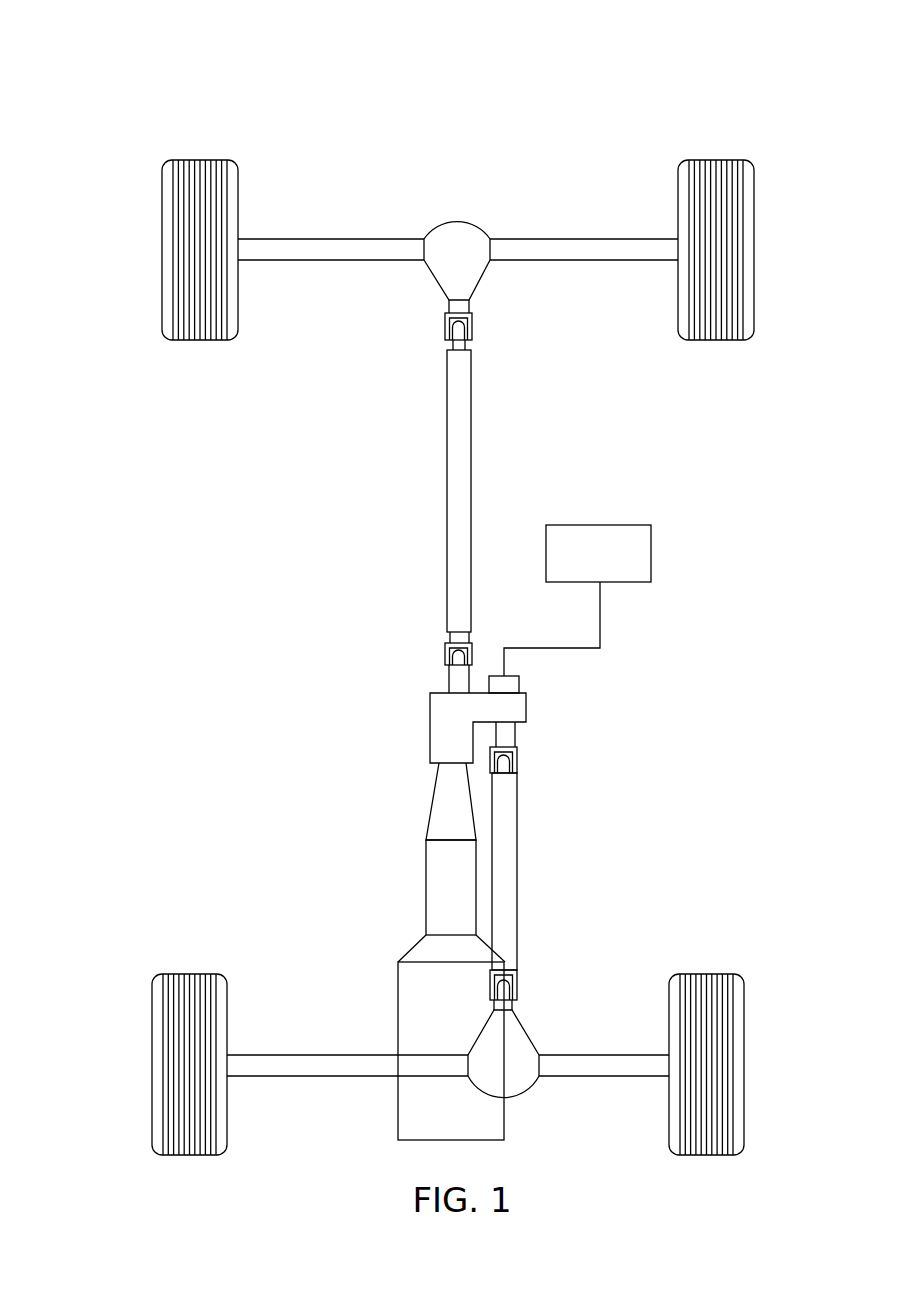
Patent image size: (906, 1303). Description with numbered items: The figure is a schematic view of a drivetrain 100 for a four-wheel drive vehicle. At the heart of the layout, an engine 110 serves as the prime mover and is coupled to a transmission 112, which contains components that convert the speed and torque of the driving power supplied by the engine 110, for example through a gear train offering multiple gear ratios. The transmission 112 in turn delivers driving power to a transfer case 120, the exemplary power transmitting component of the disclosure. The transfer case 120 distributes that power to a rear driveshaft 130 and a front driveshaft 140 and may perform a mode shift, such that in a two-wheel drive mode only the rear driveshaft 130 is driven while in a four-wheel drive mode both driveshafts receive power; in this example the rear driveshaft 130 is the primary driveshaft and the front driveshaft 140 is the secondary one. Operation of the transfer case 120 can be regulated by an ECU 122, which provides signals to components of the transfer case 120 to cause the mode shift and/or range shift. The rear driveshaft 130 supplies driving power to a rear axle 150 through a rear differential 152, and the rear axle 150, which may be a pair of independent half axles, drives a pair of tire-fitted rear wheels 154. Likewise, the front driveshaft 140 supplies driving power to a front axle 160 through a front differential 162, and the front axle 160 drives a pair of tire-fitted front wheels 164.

The drivetrain 100 is at (142, 118).
The engine 110 is at (410, 1000).
The transmission 112 is at (428, 882).
The transfer case 120 is at (440, 725).
The ECU 122 is at (600, 527).
The rear driveshaft 130 is at (447, 477).
The front driveshaft 140 is at (510, 876).
The rear axle 150 is at (578, 240).
The rear differential 152 is at (460, 222).
The rear wheels 154 is at (198, 158).
The front axle 160 is at (625, 1058).
The front differential 162 is at (519, 1035).
The front wheels 164 is at (183, 978).